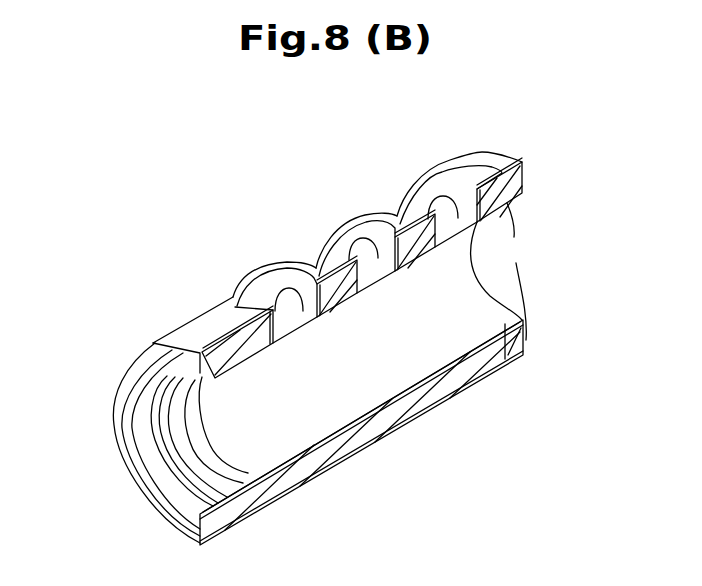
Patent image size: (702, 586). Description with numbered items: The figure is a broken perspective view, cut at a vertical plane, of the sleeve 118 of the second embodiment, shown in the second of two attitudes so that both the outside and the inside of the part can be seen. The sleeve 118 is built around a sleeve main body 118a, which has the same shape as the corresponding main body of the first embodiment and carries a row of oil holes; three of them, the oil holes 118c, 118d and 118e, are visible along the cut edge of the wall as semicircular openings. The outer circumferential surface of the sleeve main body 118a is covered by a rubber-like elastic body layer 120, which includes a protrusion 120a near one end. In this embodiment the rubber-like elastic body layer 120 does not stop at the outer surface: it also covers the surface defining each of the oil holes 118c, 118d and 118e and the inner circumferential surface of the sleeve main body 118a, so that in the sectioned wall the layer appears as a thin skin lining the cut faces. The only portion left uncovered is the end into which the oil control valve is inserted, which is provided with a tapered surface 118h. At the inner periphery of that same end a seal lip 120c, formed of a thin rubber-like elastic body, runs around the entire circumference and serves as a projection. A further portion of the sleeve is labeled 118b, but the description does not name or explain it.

The sleeve 118 is at (250, 189).
The sleeve main body 118a is at (508, 271).
The inner surface of body 118b is at (372, 371).
The oil hole 118c is at (287, 300).
The oil hole 118d is at (366, 250).
The oil hole 118e is at (448, 206).
The tapered surface 118h is at (150, 452).
The rubber-like elastic body layer 120 is at (198, 330).
The protrusion 120a is at (483, 158).
The seal lip 120c is at (247, 367).